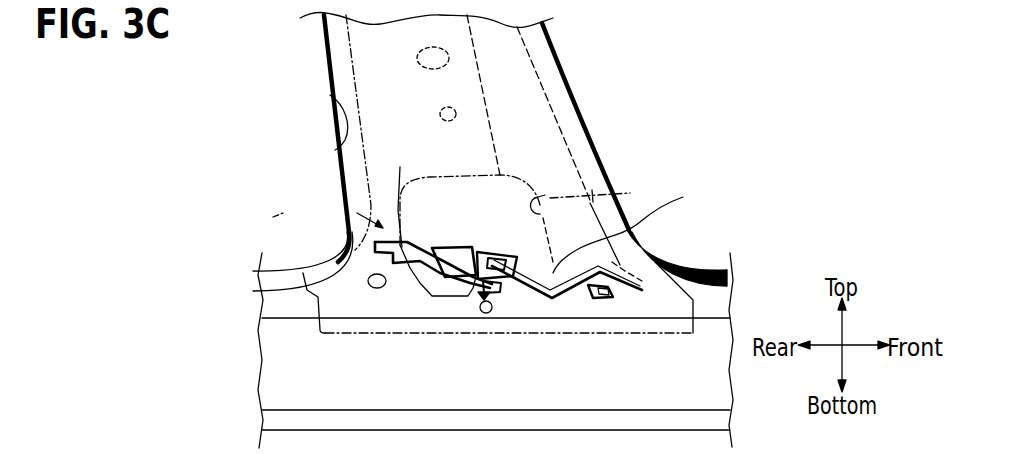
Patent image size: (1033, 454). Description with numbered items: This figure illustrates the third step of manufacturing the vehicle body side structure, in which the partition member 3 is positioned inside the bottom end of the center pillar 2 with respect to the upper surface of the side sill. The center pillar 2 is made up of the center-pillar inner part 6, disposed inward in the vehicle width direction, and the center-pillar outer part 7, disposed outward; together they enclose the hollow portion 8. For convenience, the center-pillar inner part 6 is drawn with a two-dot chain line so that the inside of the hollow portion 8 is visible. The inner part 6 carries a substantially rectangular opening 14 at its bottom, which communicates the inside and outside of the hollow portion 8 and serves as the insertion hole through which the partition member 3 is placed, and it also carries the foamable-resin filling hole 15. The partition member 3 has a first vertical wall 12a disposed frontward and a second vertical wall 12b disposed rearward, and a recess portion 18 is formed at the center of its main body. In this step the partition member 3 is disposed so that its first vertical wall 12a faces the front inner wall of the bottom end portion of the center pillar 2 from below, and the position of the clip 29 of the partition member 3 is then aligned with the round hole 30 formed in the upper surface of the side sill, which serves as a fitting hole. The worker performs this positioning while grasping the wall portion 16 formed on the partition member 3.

The center pillar 2 is at (263, 28).
The center-pillar outer part 7 is at (328, 80).
The center-pillar inner part 6 is at (337, 106).
The hollow portion 8 is at (337, 218).
The second vertical wall 12b is at (390, 247).
The first vertical wall 12a is at (652, 253).
The opening 14 is at (627, 193).
The partition member 3 is at (634, 154).
The recess portion 18 is at (458, 247).
The wall portion 16 is at (483, 250).
The foamable-resin filling hole 15 is at (375, 289).
The clip 29 is at (483, 295).
The round hole 30 is at (484, 314).